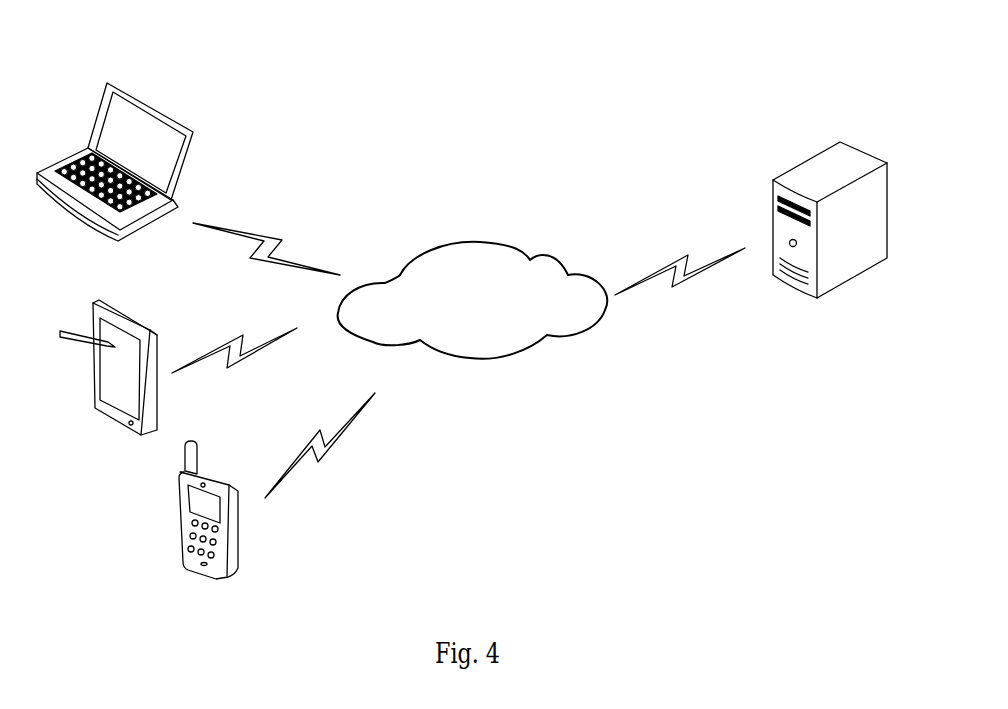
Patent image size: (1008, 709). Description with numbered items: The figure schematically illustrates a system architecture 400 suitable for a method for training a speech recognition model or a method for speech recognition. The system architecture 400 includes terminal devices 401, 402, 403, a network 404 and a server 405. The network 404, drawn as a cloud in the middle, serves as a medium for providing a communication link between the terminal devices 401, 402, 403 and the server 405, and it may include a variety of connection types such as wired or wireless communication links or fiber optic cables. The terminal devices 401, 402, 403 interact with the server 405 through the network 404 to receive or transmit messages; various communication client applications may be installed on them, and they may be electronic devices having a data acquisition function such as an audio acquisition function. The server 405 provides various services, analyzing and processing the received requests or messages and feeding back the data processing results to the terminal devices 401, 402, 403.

The system architecture 400 is at (507, 90).
The terminal device 401 is at (186, 521).
The terminal device 402 is at (103, 376).
The terminal device 403 is at (115, 173).
The network 404 is at (473, 300).
The server 405 is at (830, 244).